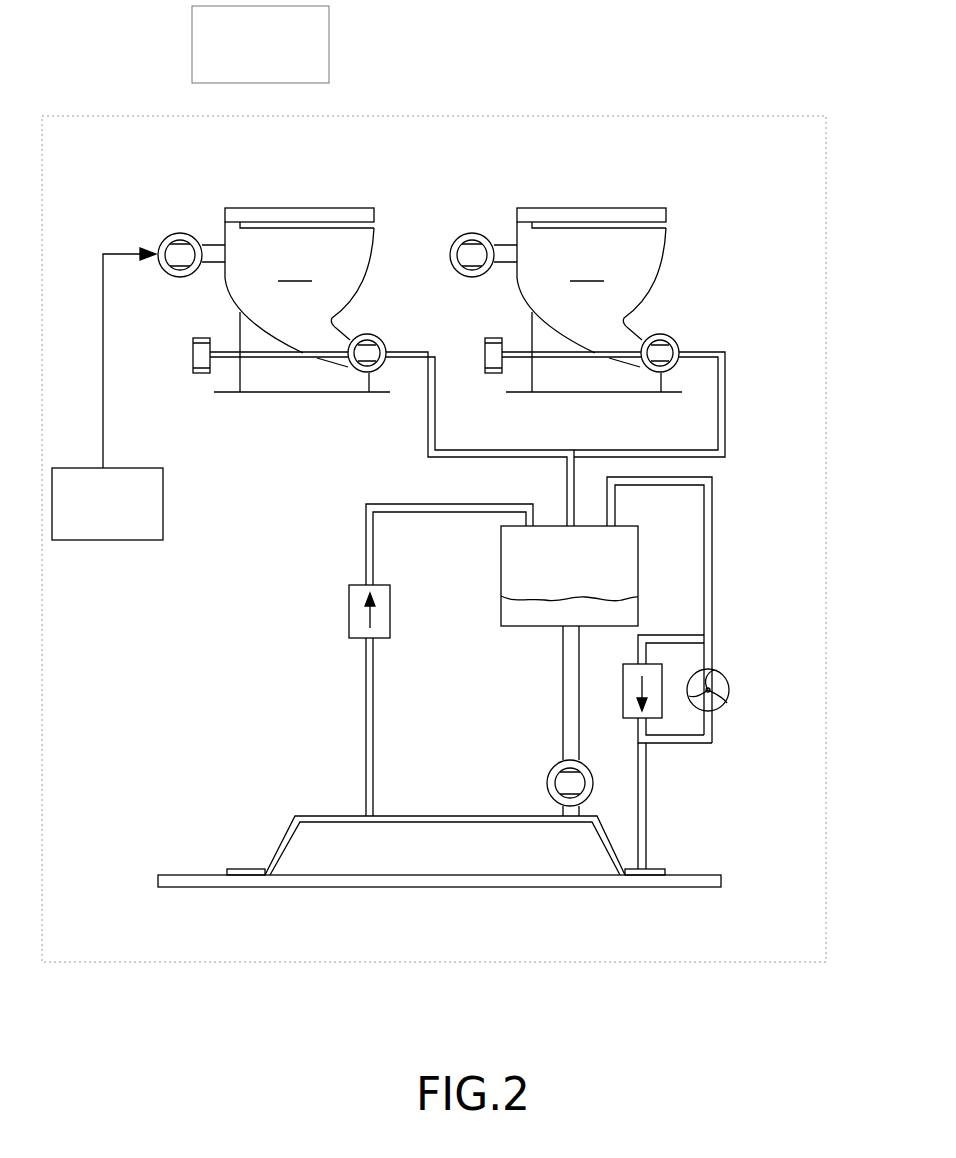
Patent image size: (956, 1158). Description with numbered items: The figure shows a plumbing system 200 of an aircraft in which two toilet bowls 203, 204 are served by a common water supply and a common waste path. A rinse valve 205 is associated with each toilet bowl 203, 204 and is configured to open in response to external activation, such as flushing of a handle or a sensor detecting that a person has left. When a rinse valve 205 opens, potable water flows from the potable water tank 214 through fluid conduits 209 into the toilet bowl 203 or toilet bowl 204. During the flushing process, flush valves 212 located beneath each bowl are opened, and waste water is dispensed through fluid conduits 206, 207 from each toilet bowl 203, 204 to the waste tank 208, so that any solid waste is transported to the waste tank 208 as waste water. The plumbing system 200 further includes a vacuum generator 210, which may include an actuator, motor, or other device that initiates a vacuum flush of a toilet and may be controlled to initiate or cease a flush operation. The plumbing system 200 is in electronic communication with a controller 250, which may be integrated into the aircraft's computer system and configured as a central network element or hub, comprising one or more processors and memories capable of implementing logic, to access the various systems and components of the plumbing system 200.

The plumbing system 200 is at (660, 145).
The toilet bowl 203 is at (302, 300).
The toilet bowl 204 is at (594, 300).
The rinse valve 205 is at (180, 233).
The fluid conduit 206 is at (425, 427).
The fluid conduit 207 is at (727, 394).
The waste tank 208 is at (501, 555).
The fluid conduit 209 is at (212, 250).
The vacuum generator 210 is at (723, 672).
The flush valve 212 is at (385, 350).
The potable water tank 214 is at (144, 541).
The controller 250 is at (420, 116).